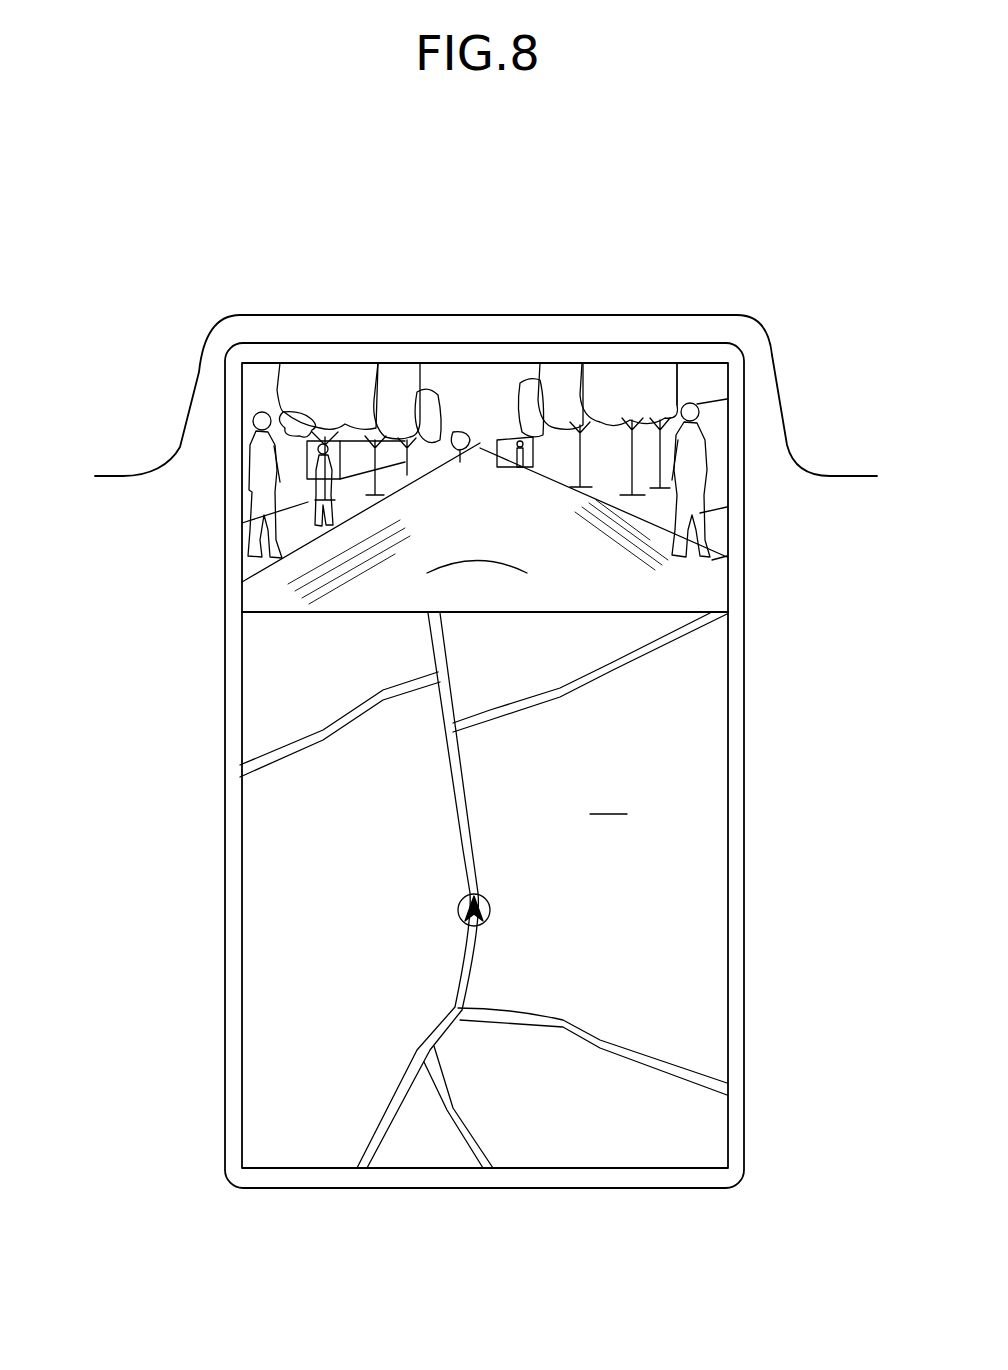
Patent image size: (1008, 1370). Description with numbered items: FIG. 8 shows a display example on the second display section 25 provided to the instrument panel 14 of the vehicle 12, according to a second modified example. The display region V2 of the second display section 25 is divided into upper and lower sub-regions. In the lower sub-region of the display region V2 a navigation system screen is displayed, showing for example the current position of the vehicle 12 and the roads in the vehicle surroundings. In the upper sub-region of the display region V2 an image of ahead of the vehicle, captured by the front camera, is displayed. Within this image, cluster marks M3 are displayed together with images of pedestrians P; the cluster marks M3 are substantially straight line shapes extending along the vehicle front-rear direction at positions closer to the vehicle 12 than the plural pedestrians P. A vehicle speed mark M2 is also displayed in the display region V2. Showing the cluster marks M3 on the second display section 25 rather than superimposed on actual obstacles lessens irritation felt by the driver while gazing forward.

The vehicle 12 is at (238, 268).
The instrument panel 14 is at (125, 476).
The second display section 25 is at (500, 362).
The pedestrians P is at (250, 438).
The vehicle speed mark M2 is at (433, 583).
The cluster mark M3 is at (283, 578).
The display region V2 is at (483, 890).